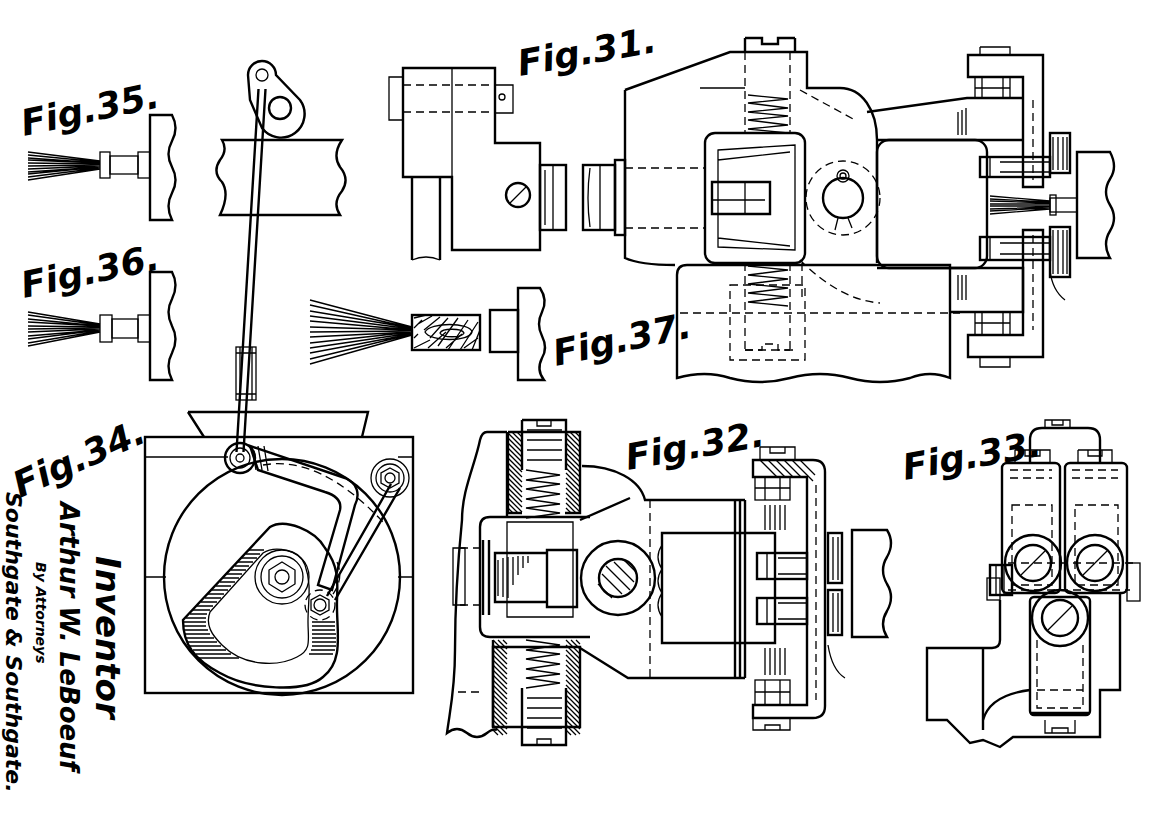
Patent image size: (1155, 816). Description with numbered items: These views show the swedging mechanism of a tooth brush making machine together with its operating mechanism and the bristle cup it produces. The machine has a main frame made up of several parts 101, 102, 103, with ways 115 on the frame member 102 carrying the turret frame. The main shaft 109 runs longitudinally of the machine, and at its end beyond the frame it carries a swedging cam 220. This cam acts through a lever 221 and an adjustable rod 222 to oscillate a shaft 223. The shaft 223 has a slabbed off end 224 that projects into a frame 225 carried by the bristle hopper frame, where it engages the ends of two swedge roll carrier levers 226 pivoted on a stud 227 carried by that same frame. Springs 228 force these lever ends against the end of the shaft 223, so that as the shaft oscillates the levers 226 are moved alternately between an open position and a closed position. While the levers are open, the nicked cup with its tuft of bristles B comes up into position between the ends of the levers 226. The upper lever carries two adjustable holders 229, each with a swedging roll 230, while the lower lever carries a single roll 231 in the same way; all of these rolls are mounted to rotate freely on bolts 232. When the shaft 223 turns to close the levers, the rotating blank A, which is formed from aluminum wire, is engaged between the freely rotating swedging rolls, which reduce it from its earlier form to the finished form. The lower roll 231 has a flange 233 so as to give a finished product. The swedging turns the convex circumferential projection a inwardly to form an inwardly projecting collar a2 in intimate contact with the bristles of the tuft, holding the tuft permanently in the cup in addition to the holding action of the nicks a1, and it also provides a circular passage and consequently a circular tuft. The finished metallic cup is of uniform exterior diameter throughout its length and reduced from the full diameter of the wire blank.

In FIG. 34, the frame part 101 is at (385, 680).
In FIG. 34, the frame member 102 is at (406, 497).
In FIG. 34, the frame part 103 is at (298, 208).
In FIG. 34, the main shaft 109 is at (276, 580).
In FIG. 34, the ways 115 is at (365, 420).
In FIG. 34, the swedging cam 220 is at (205, 492).
In FIG. 34, the lever 221 is at (348, 524).
In FIG. 34, the adjustable rod 222 is at (252, 327).
In FIG. 31, the adjustable rod 222 is at (416, 203).
In FIG. 34, the shaft 223 is at (292, 108).
In FIG. 31, the shaft 223 is at (552, 172).
In FIG. 32, the shaft 223 is at (458, 575).
In FIG. 31, the slabbed off end 224 is at (760, 225).
In FIG. 32, the slabbed off end 224 is at (538, 585).
In FIG. 31, the frame 225 is at (633, 108).
In FIG. 32, the frame 225 is at (488, 453).
In FIG. 33, the frame 225 is at (1070, 440).
In FIG. 31, the swedge roll carrier levers 226 is at (925, 106).
In FIG. 32, the swedge roll carrier levers 226 is at (708, 530).
In FIG. 31, the stud 227 is at (863, 195).
In FIG. 32, the stud 227 is at (636, 590).
In FIG. 33, the stud 227 is at (1000, 586).
In FIG. 31, the springs 228 is at (748, 118).
In FIG. 32, the springs 228 is at (535, 520).
In FIG. 31, the adjustable holders 229 is at (1043, 84).
In FIG. 32, the adjustable holders 229 is at (825, 515).
In FIG. 33, the adjustable holders 229 is at (1075, 492).
In FIG. 31, the swedging roll 230 is at (1060, 133).
In FIG. 32, the swedging roll 230 is at (842, 552).
In FIG. 33, the swedging roll 230 is at (1095, 535).
In FIG. 31, the roll 231 is at (1060, 277).
In FIG. 32, the roll 231 is at (835, 635).
In FIG. 33, the roll 231 is at (1032, 622).
In FIG. 31, the bolts 232 is at (980, 165).
In FIG. 32, the bolts 232 is at (757, 567).
In FIG. 33, the bolts 232 is at (1000, 562).
In FIG. 31, the flange 233 is at (1073, 302).
In FIG. 32, the flange 233 is at (854, 666).
In FIG. 35, the wire blank A is at (146, 178).
In FIG. 36, the wire blank A is at (146, 340).
In FIG. 37, the wire blank A is at (505, 338).
In FIG. 31, the wire blank A is at (1105, 213).
In FIG. 32, the wire blank A is at (871, 583).
In FIG. 35, the tuft of bristles B is at (62, 207).
In FIG. 36, the tuft of bristles B is at (64, 370).
In FIG. 37, the tuft of bristles B is at (340, 320).
In FIG. 31, the tuft of bristles B is at (985, 204).
In FIG. 35, the convex circumferential projection a is at (110, 176).
In FIG. 31, the nicks a1 is at (1068, 210).
In FIG. 37, the inwardly projecting collar a2 is at (415, 325).